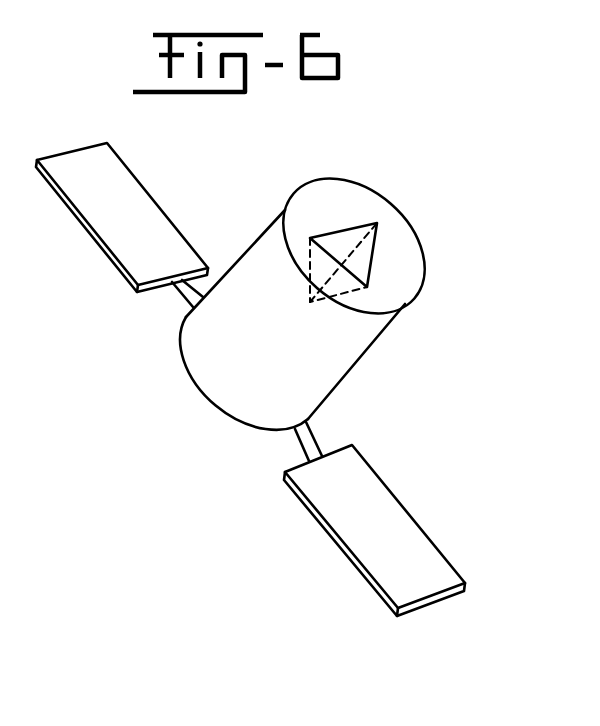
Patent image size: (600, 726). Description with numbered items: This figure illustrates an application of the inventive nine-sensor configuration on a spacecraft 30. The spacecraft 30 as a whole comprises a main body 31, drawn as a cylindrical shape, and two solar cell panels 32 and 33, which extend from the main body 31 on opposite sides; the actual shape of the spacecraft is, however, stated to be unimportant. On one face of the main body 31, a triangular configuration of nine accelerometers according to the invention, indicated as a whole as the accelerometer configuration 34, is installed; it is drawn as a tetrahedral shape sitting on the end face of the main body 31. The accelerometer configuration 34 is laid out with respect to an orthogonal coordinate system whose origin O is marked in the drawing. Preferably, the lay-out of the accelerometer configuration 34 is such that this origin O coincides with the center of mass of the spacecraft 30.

The spacecraft 30 is at (199, 390).
The main body 31 is at (355, 366).
The solar cell panel 32 is at (83, 201).
The solar cell panel 33 is at (380, 490).
The accelerometer configuration 34 is at (373, 252).
The origin O is at (310, 301).